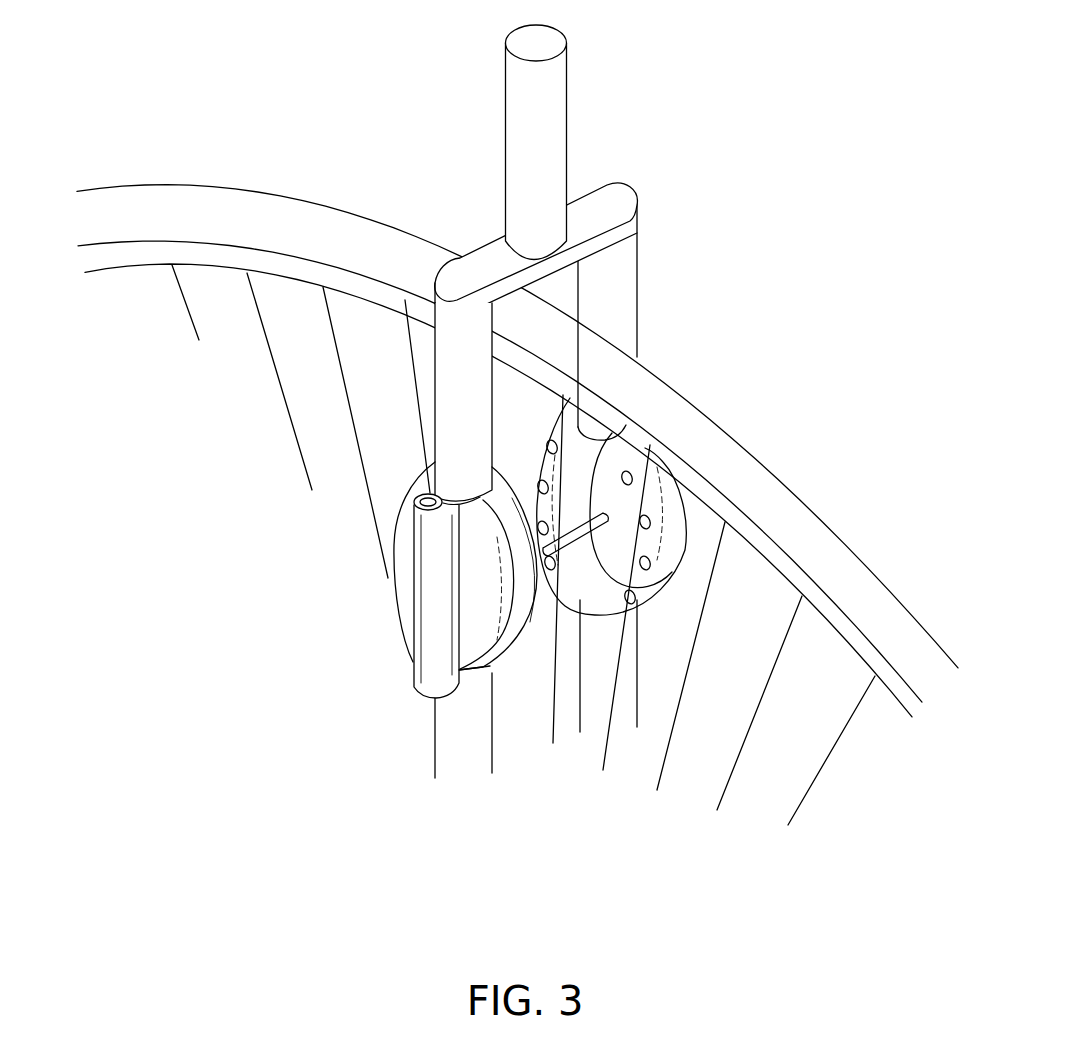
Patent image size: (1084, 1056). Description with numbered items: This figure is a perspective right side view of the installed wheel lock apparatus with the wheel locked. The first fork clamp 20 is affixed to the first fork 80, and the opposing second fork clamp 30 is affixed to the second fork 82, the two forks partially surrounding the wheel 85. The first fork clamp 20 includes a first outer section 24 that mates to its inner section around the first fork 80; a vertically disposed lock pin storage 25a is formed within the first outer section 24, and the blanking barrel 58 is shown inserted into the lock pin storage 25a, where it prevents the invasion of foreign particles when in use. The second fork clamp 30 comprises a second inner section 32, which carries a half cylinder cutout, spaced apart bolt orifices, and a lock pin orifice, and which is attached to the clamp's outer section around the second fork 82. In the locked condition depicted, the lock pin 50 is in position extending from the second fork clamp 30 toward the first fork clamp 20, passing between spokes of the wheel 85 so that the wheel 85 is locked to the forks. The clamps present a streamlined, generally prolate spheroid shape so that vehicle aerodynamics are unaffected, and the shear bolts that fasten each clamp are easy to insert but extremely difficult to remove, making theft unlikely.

The first fork clamp 20 is at (418, 633).
The first outer section 24 is at (488, 638).
The lock pin storage 25a is at (425, 622).
The second fork clamp 30 is at (694, 519).
The second inner section 32 is at (630, 567).
The lock pin 50 is at (644, 519).
The blanking barrel 58 is at (428, 497).
The first fork 80 is at (447, 350).
The second fork 82 is at (626, 256).
The wheel 85 is at (232, 245).